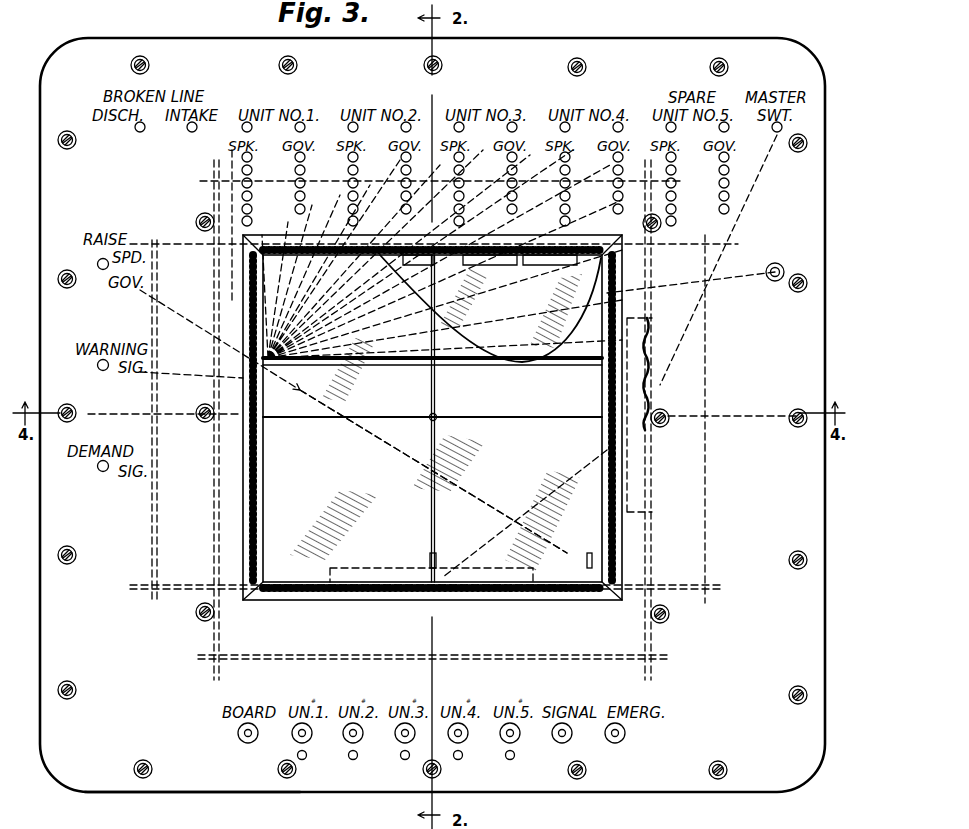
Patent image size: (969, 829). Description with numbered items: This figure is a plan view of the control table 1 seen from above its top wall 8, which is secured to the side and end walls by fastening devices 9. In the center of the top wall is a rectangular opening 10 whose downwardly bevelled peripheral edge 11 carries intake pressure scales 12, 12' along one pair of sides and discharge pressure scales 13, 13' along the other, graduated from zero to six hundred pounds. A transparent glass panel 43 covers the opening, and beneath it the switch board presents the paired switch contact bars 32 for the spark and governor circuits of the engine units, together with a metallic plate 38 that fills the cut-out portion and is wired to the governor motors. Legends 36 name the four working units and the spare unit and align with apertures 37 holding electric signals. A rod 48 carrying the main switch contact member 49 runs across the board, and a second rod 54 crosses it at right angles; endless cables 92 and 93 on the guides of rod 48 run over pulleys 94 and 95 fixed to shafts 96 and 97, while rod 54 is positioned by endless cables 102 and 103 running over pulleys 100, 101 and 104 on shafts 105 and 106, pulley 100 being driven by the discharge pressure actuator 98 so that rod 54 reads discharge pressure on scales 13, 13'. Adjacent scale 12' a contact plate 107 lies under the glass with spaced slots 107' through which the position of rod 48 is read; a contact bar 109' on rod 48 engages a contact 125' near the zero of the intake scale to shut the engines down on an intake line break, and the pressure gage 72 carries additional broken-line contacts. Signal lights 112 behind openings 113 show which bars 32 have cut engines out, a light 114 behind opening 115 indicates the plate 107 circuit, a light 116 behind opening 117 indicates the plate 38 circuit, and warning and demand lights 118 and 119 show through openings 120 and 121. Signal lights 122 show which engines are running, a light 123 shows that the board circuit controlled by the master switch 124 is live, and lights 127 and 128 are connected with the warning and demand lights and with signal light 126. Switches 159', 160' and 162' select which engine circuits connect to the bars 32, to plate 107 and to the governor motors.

The table 1 is at (790, 792).
The top wall 8 is at (120, 753).
The fastening devices 9 is at (76, 690).
The rectangular-shaped opening 10 is at (622, 300).
The bevelled peripheral edge 11 is at (243, 450).
The intake pressure scale 12 is at (490, 610).
The intake pressure scale 12' is at (593, 228).
The discharge pressure scale 13 is at (220, 498).
The discharge pressure scale 13' is at (653, 503).
The switch contact bars 32 is at (405, 372).
The legends 36 is at (522, 106).
The apertures 37 is at (570, 128).
The metallic plate 38 is at (278, 556).
The glass panel 43 is at (605, 401).
The rod 48 is at (436, 519).
The main switch contact member 49 is at (437, 415).
The rod 54 is at (367, 420).
The pressure gage 72 is at (640, 338).
The endless cable 92 is at (195, 588).
The endless cable 93 is at (210, 240).
The pulley 94 is at (718, 588).
The pulley 95 is at (705, 244).
The shaft 96 is at (155, 511).
The shaft 97 is at (710, 510).
The pressure operated actuator 98 is at (655, 440).
The pulley 100 is at (657, 322).
The pulley 101 is at (665, 193).
The endless cable 102 is at (650, 562).
The endless cable 103 is at (215, 550).
The pulley 104 is at (214, 163).
The shaft 105 is at (402, 658).
The shaft 106 is at (325, 181).
The contact plate 107 is at (490, 322).
The spaced slots 107' is at (481, 234).
The contact bar 109' is at (414, 556).
The signal light 112 is at (517, 128).
The openings 113 is at (507, 129).
The light 114 is at (188, 131).
The opening 115 is at (781, 282).
The light 116 is at (98, 262).
The opening 117 is at (103, 270).
The warning signal light 118 is at (97, 366).
The demand signal light 119 is at (104, 472).
The opening 120 is at (104, 371).
The opening 121 is at (97, 468).
The signal lights 122 is at (307, 756).
The signal light 123 is at (244, 736).
The master switch 124 is at (777, 133).
The contact 125' is at (571, 568).
The signal light 126 is at (136, 131).
The signal light 127 is at (556, 745).
The signal light 128 is at (612, 744).
The switches 159' is at (266, 189).
The switches 160' is at (321, 191).
The switches 162' is at (379, 189).